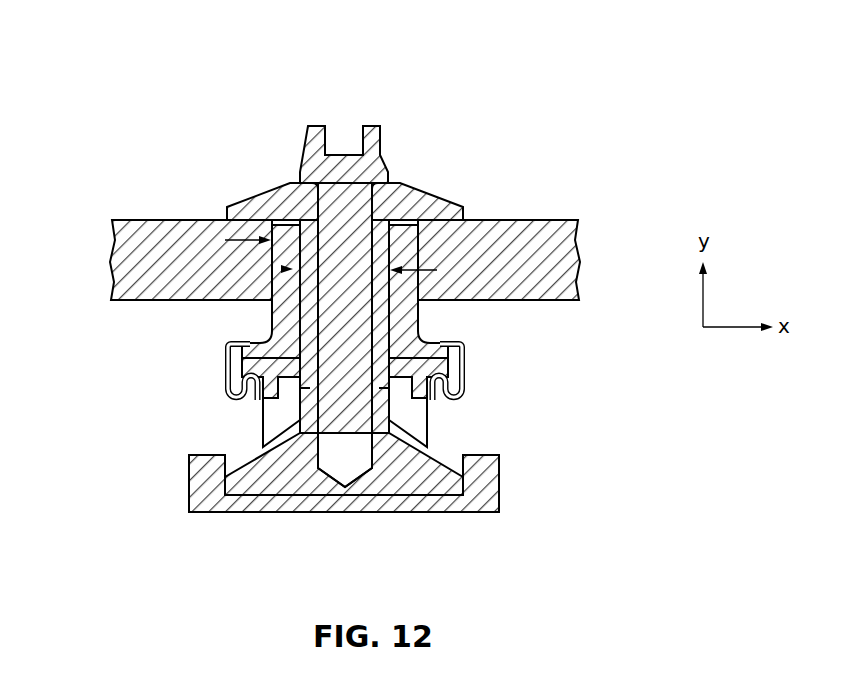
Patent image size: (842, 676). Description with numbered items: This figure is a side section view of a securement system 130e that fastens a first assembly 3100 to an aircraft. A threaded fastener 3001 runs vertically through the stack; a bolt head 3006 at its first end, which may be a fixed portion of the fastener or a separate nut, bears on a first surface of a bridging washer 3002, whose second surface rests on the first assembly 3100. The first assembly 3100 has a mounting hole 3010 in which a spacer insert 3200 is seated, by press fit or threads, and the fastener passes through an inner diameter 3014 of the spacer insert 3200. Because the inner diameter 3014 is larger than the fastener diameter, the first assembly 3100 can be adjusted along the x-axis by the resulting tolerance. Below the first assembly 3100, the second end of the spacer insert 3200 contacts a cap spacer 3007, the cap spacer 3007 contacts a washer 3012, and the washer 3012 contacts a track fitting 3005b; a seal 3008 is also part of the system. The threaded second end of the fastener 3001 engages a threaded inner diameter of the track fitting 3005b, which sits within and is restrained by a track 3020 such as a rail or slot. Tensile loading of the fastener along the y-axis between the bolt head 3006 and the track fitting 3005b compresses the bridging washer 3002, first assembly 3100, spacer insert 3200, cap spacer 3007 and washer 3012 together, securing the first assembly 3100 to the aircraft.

The securement system 130e is at (664, 66).
The first assembly 3100 is at (520, 219).
The bolt head 3006 is at (390, 170).
The bridging washer 3002 is at (238, 200).
The threaded fastener 3001 is at (350, 344).
The mounting hole 3010 is at (420, 240).
The inner diameter 3014 is at (283, 269).
The spacer insert 3200 is at (410, 283).
The seal 3008 is at (462, 365).
The washer 3012 is at (262, 430).
The cap spacer 3007 is at (227, 341).
The track fitting 3005b is at (430, 450).
The track 3020 is at (499, 482).